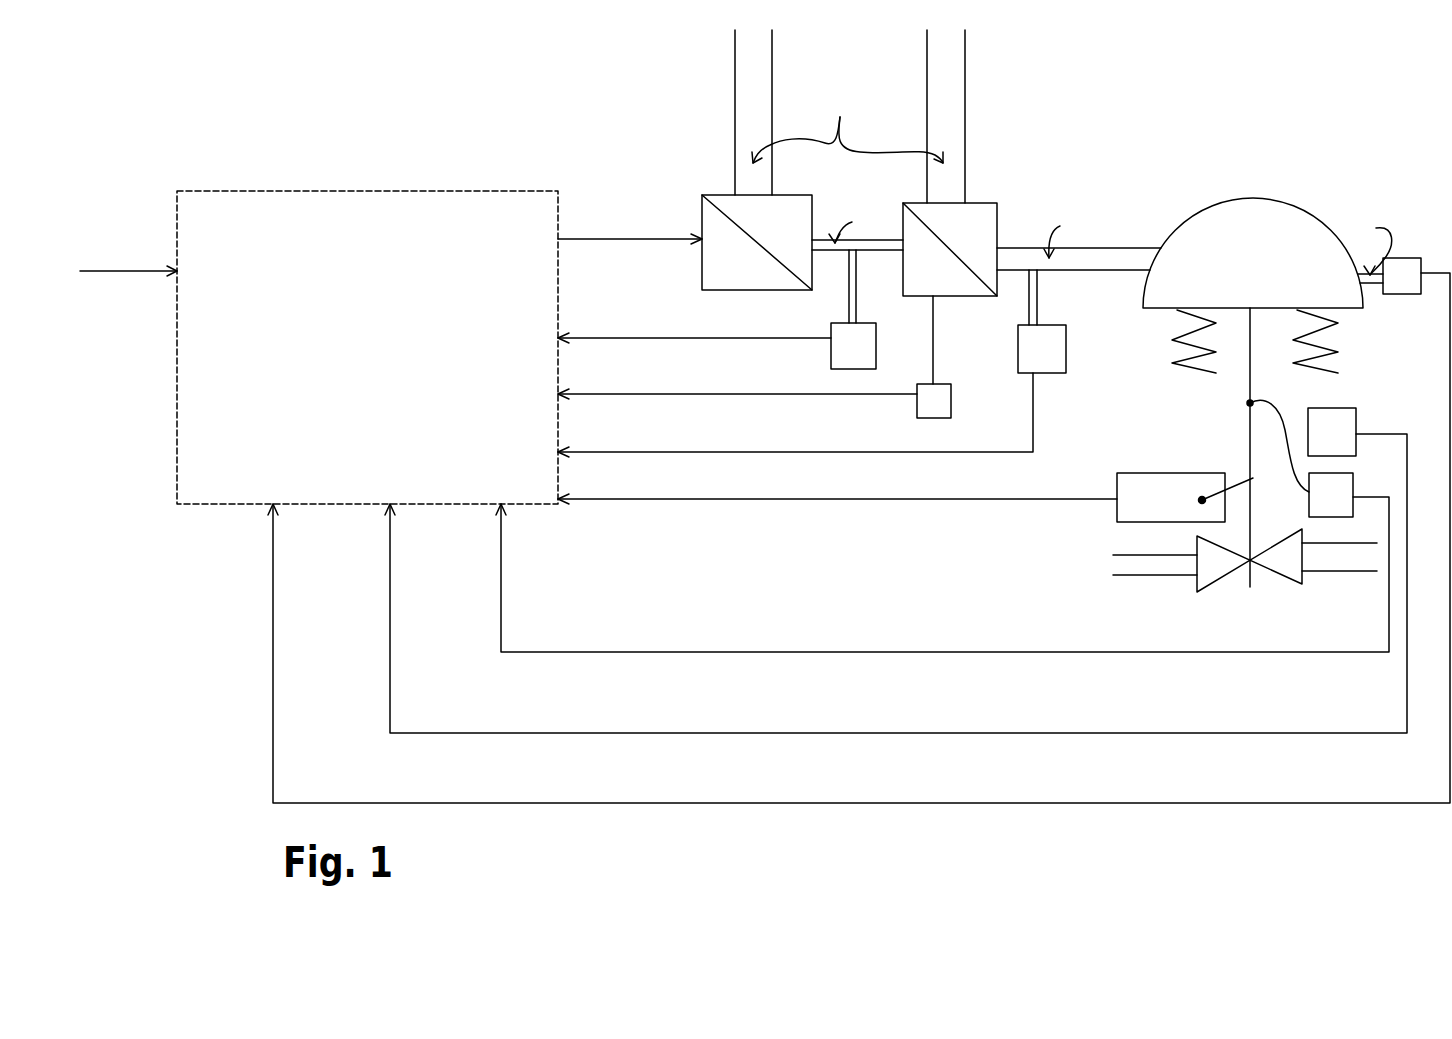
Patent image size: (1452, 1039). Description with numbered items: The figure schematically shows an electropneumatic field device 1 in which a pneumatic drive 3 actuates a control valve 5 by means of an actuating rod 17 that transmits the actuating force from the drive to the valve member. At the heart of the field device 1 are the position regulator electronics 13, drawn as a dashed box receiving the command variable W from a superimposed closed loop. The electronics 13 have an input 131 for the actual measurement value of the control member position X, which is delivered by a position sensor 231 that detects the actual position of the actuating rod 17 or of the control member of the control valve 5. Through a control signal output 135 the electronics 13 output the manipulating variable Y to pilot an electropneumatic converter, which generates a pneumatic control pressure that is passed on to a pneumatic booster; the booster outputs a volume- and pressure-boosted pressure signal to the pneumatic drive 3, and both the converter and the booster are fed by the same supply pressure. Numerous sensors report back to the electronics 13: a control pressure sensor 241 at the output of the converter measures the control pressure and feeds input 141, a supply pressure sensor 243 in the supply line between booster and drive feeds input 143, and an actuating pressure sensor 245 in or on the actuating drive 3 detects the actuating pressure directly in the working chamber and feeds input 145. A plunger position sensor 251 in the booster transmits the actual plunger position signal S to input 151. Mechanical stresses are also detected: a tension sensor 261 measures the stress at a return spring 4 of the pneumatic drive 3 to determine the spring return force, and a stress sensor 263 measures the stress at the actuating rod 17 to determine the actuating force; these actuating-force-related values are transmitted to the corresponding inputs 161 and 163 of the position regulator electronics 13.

The electropneumatic field device 1 is at (347, 125).
The position regulator electronics 13 is at (207, 256).
The control signal output 135 is at (610, 228).
The input 141 is at (675, 333).
The input 151 is at (718, 388).
The input 143 is at (776, 415).
The input 131 is at (818, 492).
The input 145 is at (853, 538).
The input 161 is at (889, 583).
The input 163 is at (937, 564).
The control pressure sensor 241 is at (857, 358).
The plunger position sensor 251 is at (940, 407).
The supply pressure sensor 243 is at (1055, 356).
The pneumatic drive 3 is at (1318, 220).
The actuating pressure sensor 245 is at (1400, 272).
The return spring 4 is at (1200, 370).
The actuating rod 17 is at (1250, 432).
The tension sensor 261 is at (1338, 435).
The stress sensor 263 is at (1332, 503).
The position sensor 231 is at (1163, 510).
The control valve 5 is at (1221, 580).